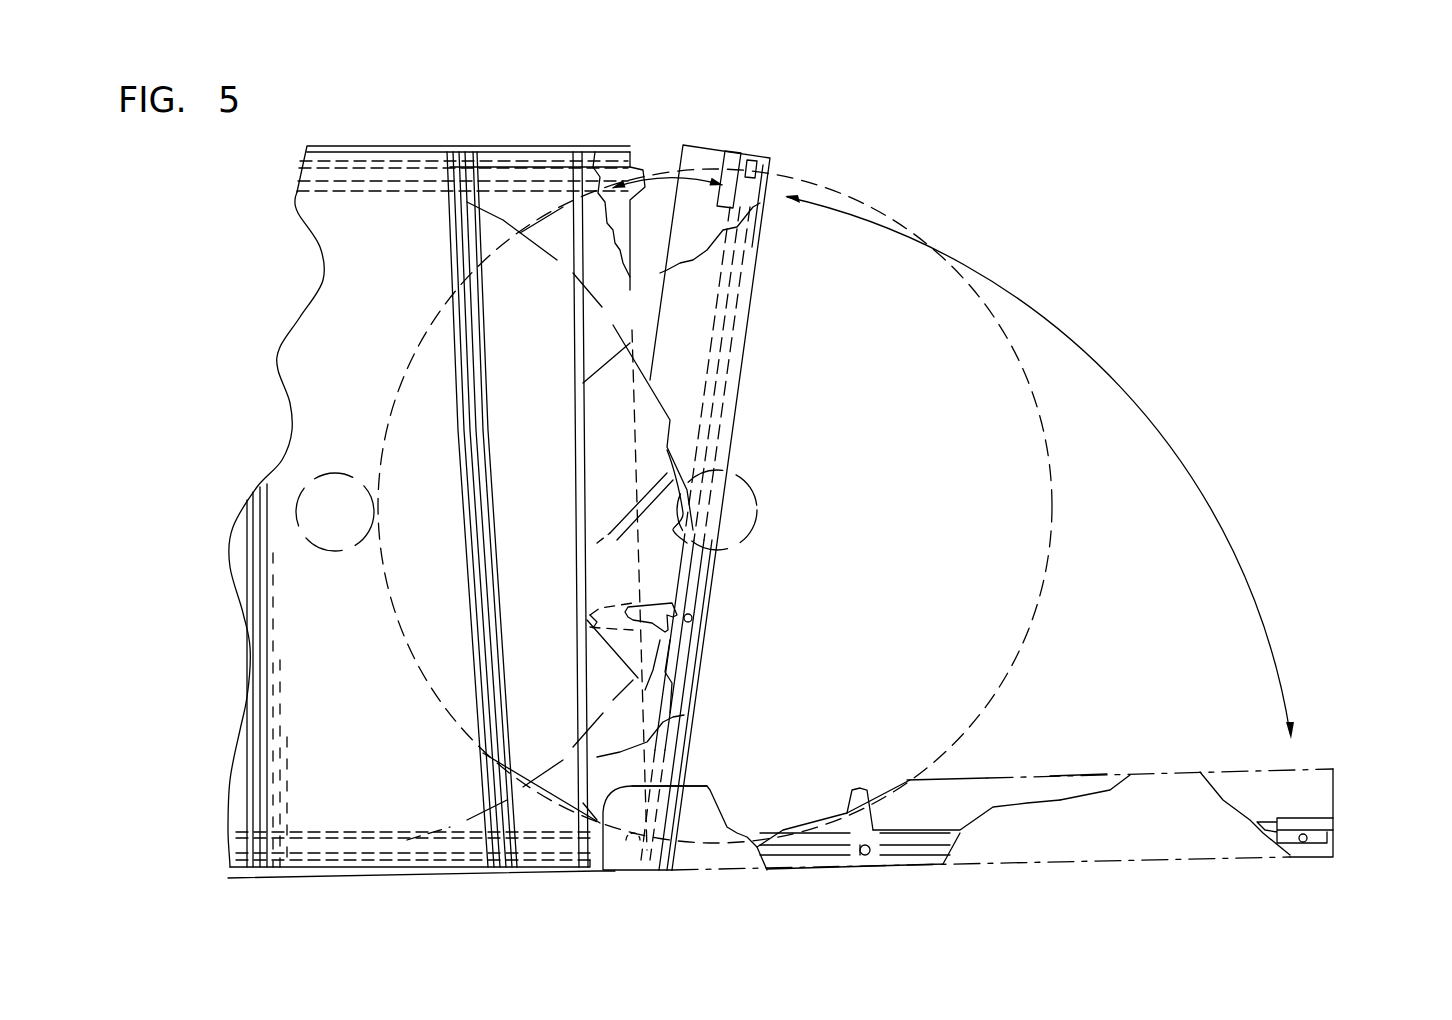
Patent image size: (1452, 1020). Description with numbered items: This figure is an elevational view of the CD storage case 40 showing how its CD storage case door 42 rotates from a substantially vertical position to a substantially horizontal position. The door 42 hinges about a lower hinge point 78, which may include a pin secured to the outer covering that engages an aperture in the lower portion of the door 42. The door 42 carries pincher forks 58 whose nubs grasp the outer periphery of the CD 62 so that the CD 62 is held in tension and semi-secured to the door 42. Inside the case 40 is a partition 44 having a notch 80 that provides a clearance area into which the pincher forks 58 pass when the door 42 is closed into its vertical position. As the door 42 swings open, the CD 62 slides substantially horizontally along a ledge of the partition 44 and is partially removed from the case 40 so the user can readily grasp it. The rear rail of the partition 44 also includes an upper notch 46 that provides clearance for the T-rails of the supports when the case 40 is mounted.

The CD storage case 40 is at (214, 438).
The CD storage case door 42 is at (726, 138).
The partition 44 is at (613, 573).
The upper notch 46 is at (1297, 817).
The pincher forks 58 is at (684, 634).
The CD 62 is at (881, 577).
The lower hinge point 78 is at (626, 865).
The notch 80 is at (582, 663).